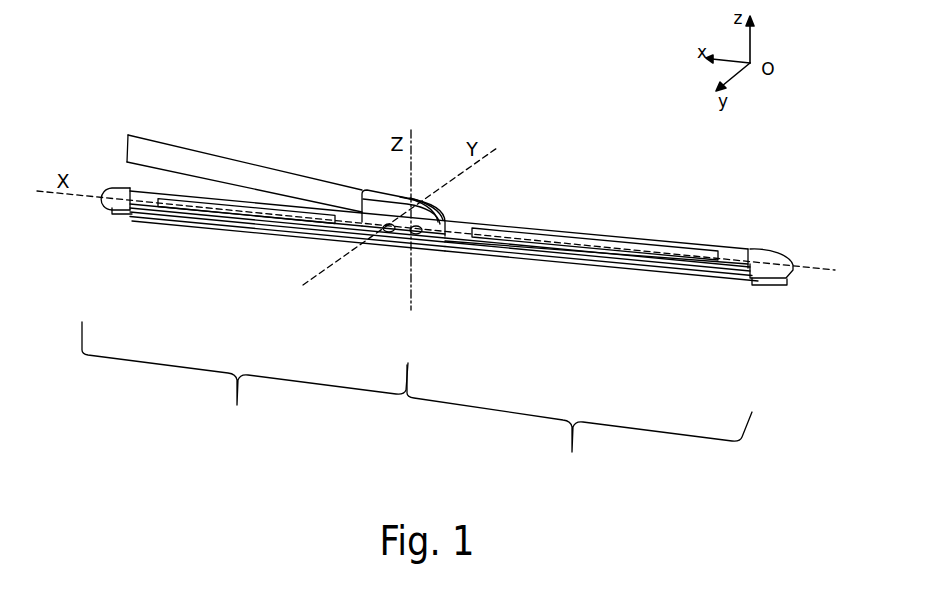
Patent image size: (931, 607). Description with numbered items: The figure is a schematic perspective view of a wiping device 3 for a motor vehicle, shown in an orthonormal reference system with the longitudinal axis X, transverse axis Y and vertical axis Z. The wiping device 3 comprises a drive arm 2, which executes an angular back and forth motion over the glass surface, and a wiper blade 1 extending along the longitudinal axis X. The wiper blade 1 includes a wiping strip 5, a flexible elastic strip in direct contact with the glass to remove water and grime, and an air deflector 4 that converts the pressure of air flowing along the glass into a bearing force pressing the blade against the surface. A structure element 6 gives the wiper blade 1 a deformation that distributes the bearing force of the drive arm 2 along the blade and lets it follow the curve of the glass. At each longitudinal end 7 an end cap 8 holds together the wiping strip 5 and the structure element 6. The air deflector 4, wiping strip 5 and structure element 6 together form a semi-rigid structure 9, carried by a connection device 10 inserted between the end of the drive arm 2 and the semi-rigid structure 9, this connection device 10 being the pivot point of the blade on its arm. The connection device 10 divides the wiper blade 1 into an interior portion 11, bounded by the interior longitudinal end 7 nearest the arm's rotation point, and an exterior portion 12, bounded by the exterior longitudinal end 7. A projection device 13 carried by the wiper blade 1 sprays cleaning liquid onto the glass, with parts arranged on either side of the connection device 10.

The wiper blade 1 is at (562, 223).
The drive arm 2 is at (133, 135).
The wiping device 3 is at (347, 128).
The air deflector 4 is at (158, 193).
The wiping strip 5 is at (263, 226).
The structure element 6 is at (530, 254).
The longitudinal end 7 is at (114, 220).
The end cap 8 is at (118, 188).
The semi-rigid structure 9 is at (620, 284).
The connection device 10 is at (430, 258).
The interior portion 11 is at (245, 380).
The exterior portion 12 is at (579, 427).
The projection device 13 is at (193, 202).